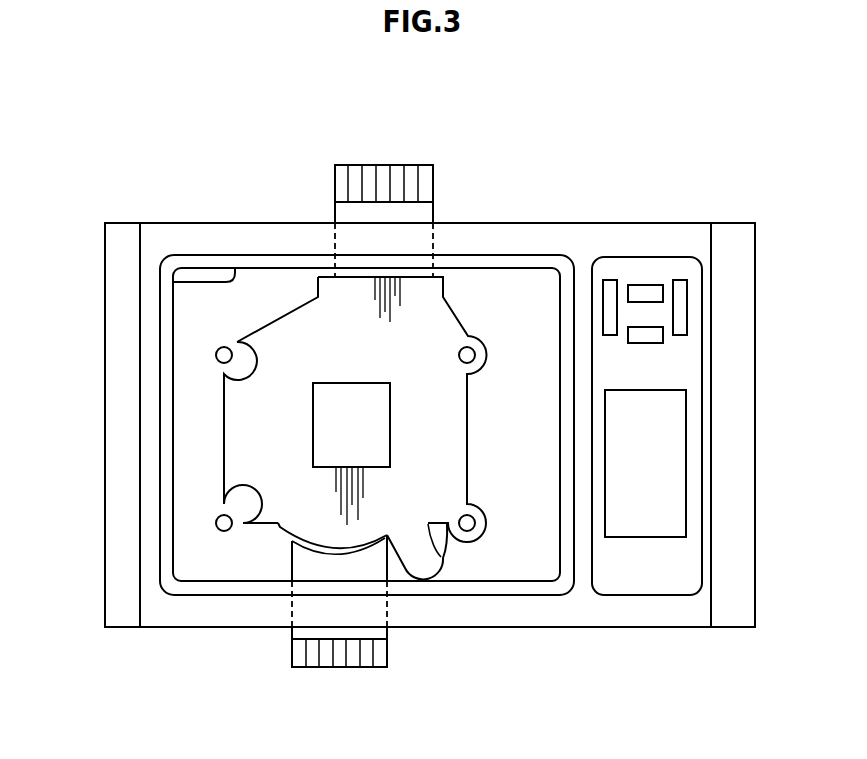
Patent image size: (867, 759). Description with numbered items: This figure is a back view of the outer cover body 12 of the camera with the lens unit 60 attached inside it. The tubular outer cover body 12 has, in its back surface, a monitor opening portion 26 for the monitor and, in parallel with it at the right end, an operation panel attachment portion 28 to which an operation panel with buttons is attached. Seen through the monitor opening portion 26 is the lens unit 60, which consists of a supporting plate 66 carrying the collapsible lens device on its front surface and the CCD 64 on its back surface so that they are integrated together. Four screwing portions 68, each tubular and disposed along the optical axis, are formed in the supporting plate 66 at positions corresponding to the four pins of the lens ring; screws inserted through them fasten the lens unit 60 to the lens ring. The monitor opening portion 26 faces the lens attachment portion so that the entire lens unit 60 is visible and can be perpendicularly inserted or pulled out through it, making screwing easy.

The outer cover body 12 is at (740, 272).
The monitor opening portion 26 is at (236, 581).
The operation panel attachment portion 28 is at (643, 573).
The lens unit 60 is at (282, 348).
The CCD 64 is at (352, 432).
The supporting plate 66 is at (435, 327).
The screwing portions 68 is at (213, 353).